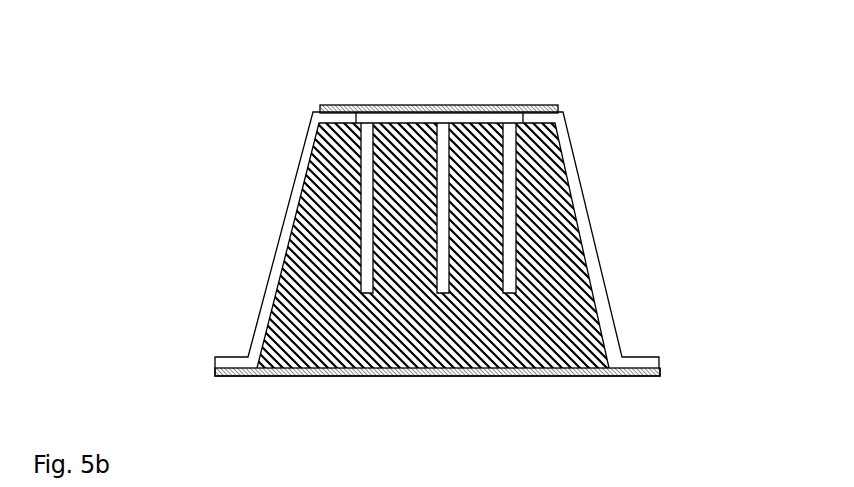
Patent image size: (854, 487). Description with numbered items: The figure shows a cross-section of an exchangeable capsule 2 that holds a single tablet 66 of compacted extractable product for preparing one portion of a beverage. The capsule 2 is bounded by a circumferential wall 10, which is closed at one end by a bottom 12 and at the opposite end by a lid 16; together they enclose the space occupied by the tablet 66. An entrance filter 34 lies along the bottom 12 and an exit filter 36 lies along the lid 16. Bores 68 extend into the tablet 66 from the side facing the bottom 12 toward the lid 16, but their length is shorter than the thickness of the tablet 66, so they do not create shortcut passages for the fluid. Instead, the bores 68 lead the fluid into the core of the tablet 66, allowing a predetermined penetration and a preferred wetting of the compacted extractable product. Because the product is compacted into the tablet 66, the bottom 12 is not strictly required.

The exchangeable capsule 2 is at (682, 315).
The circumferential wall 10 is at (590, 253).
The bottom 12 is at (523, 92).
The lid 16 is at (622, 375).
The entrance filter 34 is at (545, 108).
The exit filter 36 is at (563, 373).
The tablet 66 is at (290, 300).
The bores 68 is at (440, 135).